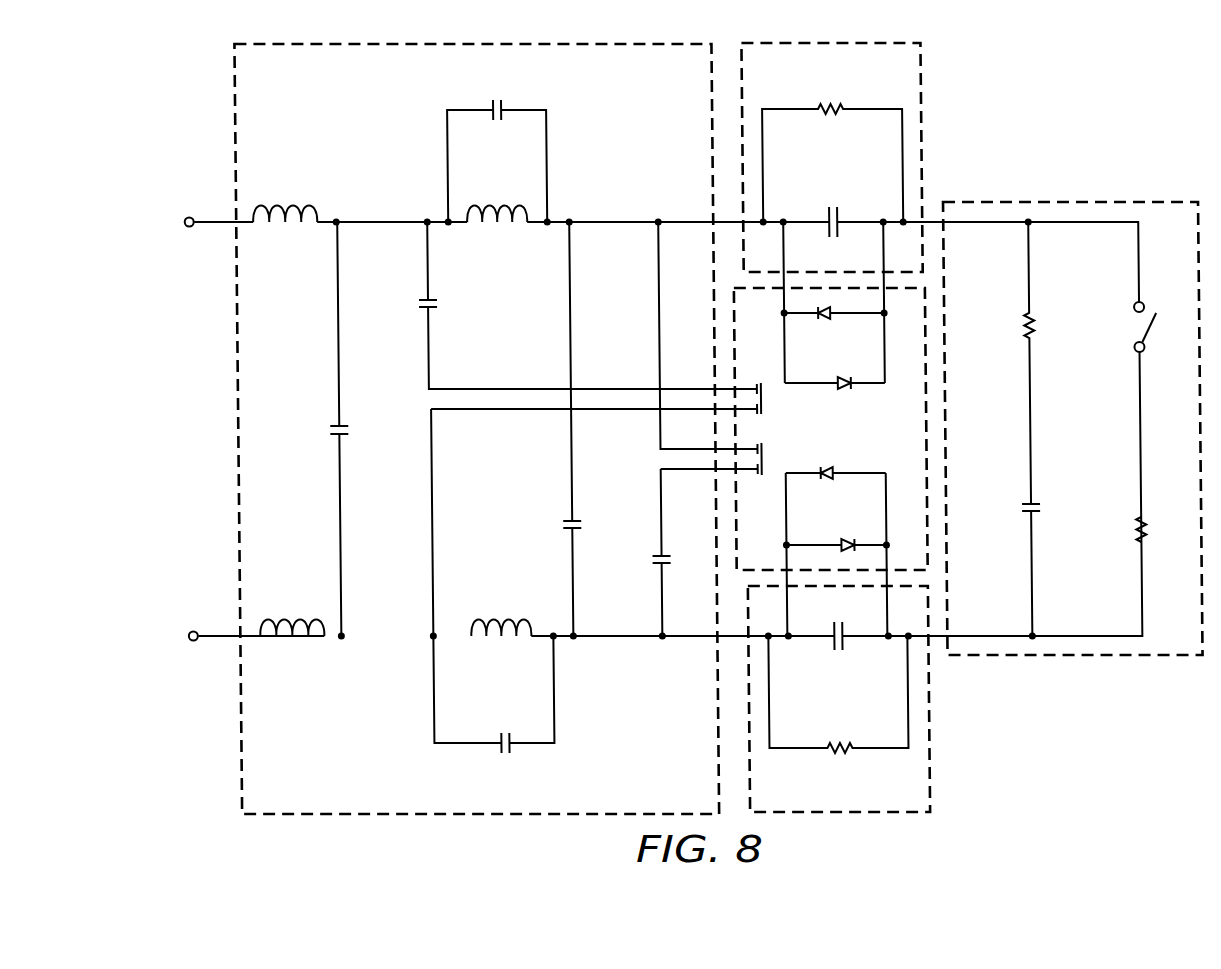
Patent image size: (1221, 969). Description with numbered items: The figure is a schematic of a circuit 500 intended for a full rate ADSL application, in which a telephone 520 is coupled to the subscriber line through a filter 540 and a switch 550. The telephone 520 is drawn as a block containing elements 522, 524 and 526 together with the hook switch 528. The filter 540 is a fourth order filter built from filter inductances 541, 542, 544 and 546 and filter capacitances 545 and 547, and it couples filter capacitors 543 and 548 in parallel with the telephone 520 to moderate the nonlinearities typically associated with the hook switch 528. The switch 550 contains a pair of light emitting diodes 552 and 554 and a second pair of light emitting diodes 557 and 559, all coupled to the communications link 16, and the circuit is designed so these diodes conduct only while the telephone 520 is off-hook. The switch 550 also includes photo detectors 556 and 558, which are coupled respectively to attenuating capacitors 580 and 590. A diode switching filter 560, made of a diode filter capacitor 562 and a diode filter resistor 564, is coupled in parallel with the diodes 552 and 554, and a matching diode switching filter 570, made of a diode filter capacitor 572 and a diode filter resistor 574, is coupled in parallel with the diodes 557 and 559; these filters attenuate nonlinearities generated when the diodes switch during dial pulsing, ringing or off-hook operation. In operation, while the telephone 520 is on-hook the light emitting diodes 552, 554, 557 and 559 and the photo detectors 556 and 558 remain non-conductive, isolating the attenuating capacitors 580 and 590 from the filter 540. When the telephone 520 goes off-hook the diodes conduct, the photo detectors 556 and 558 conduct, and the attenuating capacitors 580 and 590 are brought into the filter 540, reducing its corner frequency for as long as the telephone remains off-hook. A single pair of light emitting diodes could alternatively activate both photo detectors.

The communications link 16 is at (213, 221).
The circuit 500 is at (1096, 103).
The telephone 520 is at (1082, 656).
The resistor RR 522 is at (1022, 324).
The capacitor CR 524 is at (1016, 510).
The resistor ROH 526 is at (1132, 535).
The hook switch 528 is at (1130, 326).
The filter 540 is at (360, 121).
The filter inductance 541 is at (291, 236).
The filter inductance 542 is at (295, 648).
The filter capacitor 543 is at (324, 430).
The filter inductance 544 is at (492, 236).
The filter capacitance 545 is at (498, 124).
The filter inductance 546 is at (508, 648).
The filter capacitance 547 is at (498, 756).
The filter capacitor 548 is at (558, 525).
The switch 550 is at (899, 444).
The light emitting diode 552 is at (821, 322).
The light emitting diode 554 is at (846, 376).
The photo detector 556 is at (766, 393).
The light emitting diode 557 is at (823, 484).
The photo detector 558 is at (766, 460).
The light emitting diode 559 is at (850, 538).
The diode switching filter 560 is at (922, 98).
The diode filter capacitor 562 is at (832, 206).
The diode filter resistor 564 is at (832, 104).
The diode switching filter 570 is at (930, 758).
The diode filter capacitor 572 is at (838, 652).
The diode filter resistor 574 is at (846, 753).
The attenuating capacitor 580 is at (416, 300).
The attenuating capacitor 590 is at (647, 563).